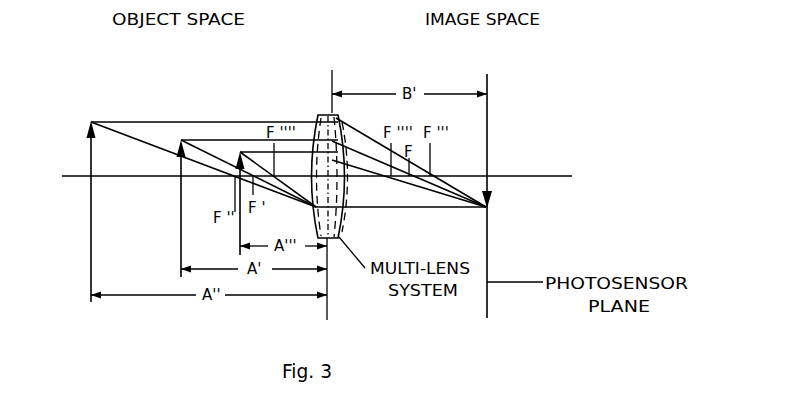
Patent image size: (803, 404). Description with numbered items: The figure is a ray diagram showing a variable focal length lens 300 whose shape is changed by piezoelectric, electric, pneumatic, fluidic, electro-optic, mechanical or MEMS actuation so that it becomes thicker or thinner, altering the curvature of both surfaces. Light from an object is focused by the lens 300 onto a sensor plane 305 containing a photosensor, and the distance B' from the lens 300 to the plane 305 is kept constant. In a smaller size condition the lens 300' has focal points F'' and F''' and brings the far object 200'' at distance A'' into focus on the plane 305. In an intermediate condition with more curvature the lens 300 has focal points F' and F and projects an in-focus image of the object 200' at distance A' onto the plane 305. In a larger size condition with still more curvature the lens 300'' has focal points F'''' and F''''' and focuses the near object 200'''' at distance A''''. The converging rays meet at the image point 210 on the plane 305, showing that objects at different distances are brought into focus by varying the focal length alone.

The object 200'' is at (75, 197).
The object 200' is at (163, 184).
The object 200'''' is at (222, 173).
The variable focal length lens 300 is at (311, 154).
The lens in smaller size condition 300' is at (344, 219).
The lens in larger size condition 300'' is at (371, 182).
The sensor plane 305 is at (487, 143).
The image point on photosensor 210 is at (487, 198).